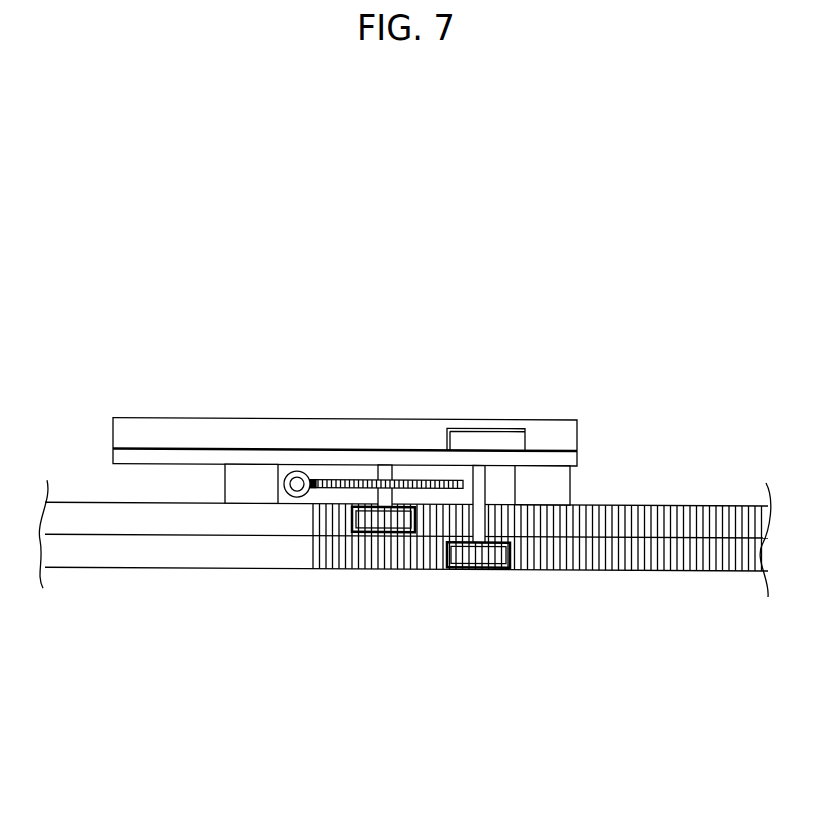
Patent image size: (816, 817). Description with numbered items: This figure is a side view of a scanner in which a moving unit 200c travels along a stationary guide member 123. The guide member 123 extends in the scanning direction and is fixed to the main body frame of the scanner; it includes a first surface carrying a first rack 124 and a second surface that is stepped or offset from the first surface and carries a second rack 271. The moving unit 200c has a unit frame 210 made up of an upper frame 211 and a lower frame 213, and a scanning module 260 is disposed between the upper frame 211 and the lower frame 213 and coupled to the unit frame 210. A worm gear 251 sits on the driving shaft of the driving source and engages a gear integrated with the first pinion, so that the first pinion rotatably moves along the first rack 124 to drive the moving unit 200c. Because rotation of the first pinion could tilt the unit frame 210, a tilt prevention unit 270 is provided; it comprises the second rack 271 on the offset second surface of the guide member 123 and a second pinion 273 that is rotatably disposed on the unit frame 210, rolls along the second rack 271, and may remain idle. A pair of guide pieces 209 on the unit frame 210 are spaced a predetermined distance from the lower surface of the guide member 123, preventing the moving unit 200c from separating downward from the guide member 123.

The moving unit 200c is at (207, 402).
The worm gear 251 is at (291, 470).
The unit frame 210 is at (492, 349).
The lower frame 213 is at (376, 460).
The upper frame 211 is at (488, 446).
The scanning module 260 is at (523, 426).
The guide pieces 209 is at (246, 489).
The first rack 124 is at (680, 514).
The guide member 123 is at (734, 502).
The second rack 271 is at (669, 560).
The second pinion 273 is at (482, 567).
The tilt prevention unit 270 is at (667, 640).